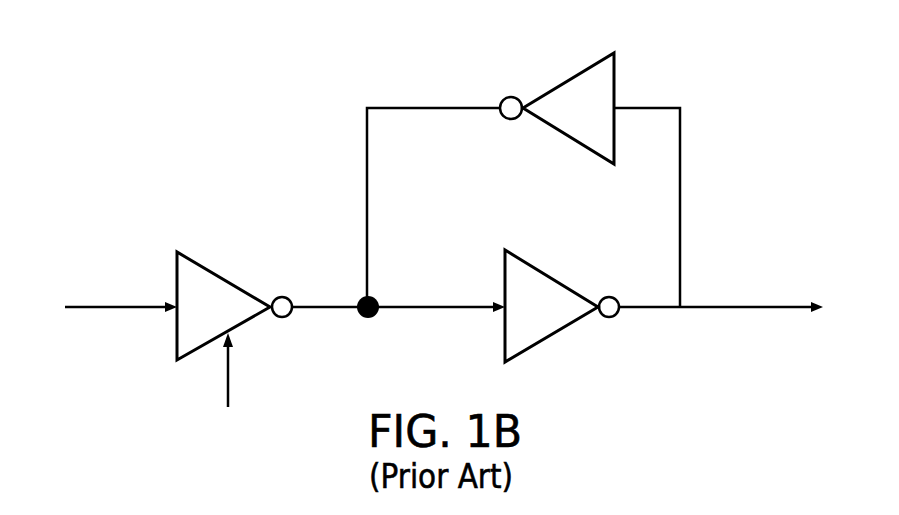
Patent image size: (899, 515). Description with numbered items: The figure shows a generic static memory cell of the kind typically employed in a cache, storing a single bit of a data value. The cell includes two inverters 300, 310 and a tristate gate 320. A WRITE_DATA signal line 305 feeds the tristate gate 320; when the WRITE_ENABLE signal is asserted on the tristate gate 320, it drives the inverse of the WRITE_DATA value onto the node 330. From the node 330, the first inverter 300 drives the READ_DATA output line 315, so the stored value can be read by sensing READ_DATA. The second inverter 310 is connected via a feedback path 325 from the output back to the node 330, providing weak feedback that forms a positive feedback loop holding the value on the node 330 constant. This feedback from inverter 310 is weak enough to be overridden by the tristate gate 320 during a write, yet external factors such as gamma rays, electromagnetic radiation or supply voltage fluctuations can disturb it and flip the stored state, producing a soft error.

The inverter 300 is at (566, 322).
The write data input 305 is at (88, 310).
The inverter 310 is at (570, 72).
The read data output 315 is at (769, 312).
The tristate gate 320 is at (213, 266).
The feedback wire 325 is at (660, 107).
The node 330 is at (378, 295).